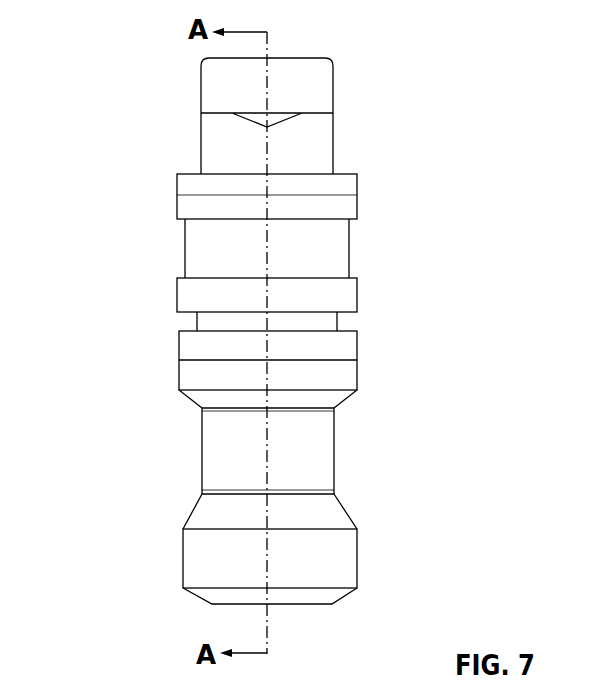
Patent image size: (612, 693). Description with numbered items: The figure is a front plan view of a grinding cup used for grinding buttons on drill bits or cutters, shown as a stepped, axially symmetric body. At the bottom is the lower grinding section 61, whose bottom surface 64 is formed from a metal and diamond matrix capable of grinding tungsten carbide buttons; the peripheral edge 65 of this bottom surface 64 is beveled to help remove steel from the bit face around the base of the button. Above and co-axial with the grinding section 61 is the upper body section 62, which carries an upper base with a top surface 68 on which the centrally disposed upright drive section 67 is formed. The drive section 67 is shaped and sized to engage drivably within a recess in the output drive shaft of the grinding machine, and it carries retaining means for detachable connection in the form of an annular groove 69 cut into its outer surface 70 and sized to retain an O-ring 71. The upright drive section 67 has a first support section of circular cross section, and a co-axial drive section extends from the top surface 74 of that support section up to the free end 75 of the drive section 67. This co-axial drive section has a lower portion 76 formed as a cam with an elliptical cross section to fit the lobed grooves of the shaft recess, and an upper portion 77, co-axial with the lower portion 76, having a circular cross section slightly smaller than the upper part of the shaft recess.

The grinding section 61 is at (326, 558).
The upper body section 62 is at (366, 453).
The bottom surface 64 is at (227, 605).
The peripheral edge 65 is at (350, 592).
The upright drive section 67 is at (388, 250).
The top surface 68 is at (240, 325).
The annular groove 69 is at (374, 326).
The outer surface 70 is at (358, 285).
The O-ring 71 is at (208, 358).
The top surface 74 is at (250, 91).
The free end 75 is at (293, 57).
The lower portion 76 is at (310, 153).
The upper portion 77 is at (318, 90).